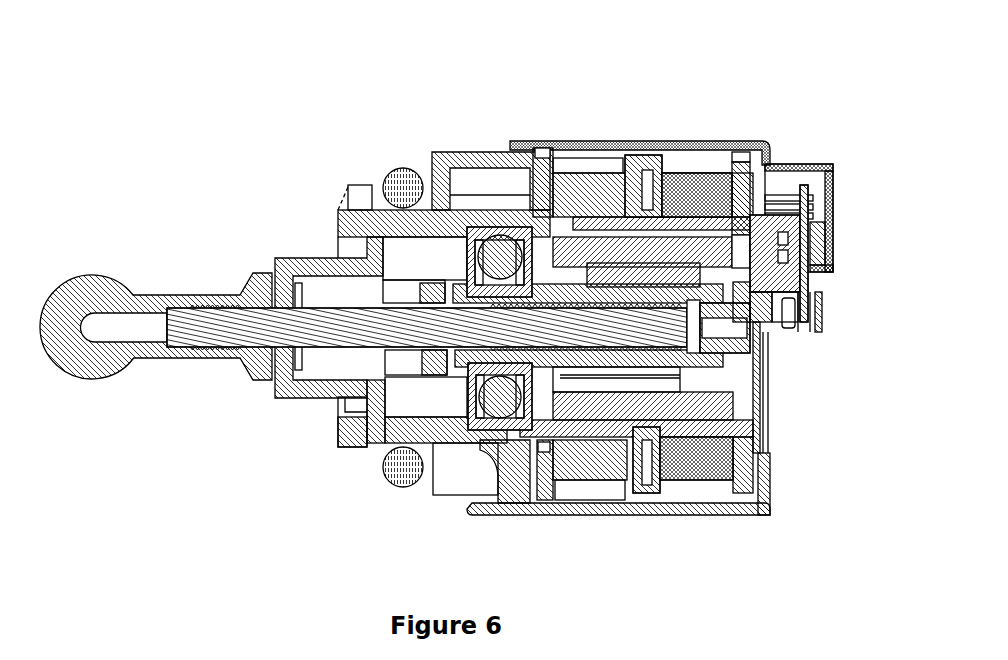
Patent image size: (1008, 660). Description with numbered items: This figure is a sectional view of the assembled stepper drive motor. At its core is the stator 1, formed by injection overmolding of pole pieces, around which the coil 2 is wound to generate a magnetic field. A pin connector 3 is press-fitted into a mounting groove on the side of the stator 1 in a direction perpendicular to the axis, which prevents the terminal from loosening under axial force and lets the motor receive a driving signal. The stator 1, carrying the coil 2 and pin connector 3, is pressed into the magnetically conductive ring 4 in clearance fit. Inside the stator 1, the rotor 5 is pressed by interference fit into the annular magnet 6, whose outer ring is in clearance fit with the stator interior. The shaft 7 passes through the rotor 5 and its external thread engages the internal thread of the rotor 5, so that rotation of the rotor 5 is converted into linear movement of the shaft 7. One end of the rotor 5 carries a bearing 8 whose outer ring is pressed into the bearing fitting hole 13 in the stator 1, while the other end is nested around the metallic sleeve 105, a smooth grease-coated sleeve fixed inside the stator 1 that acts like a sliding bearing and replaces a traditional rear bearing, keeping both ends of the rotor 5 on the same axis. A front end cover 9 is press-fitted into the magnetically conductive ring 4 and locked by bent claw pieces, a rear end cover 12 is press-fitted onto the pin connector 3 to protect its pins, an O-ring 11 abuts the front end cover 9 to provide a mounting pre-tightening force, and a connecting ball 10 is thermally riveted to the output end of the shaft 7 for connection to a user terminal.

The stator 1 is at (647, 160).
The coil 2 is at (693, 183).
The pin connector 3 is at (818, 303).
The magnetically conductive ring 4 is at (592, 141).
The rotor 5 is at (645, 357).
The annular magnet 6 is at (570, 243).
The shaft 7 is at (370, 325).
The bearing 8 is at (487, 243).
The front end cover 9 is at (297, 262).
The connecting ball 10 is at (90, 277).
The O-ring 11 is at (392, 180).
The rear end cover 12 is at (792, 163).
The bearing fitting hole 13 is at (512, 235).
The metallic sleeve 105 is at (700, 340).